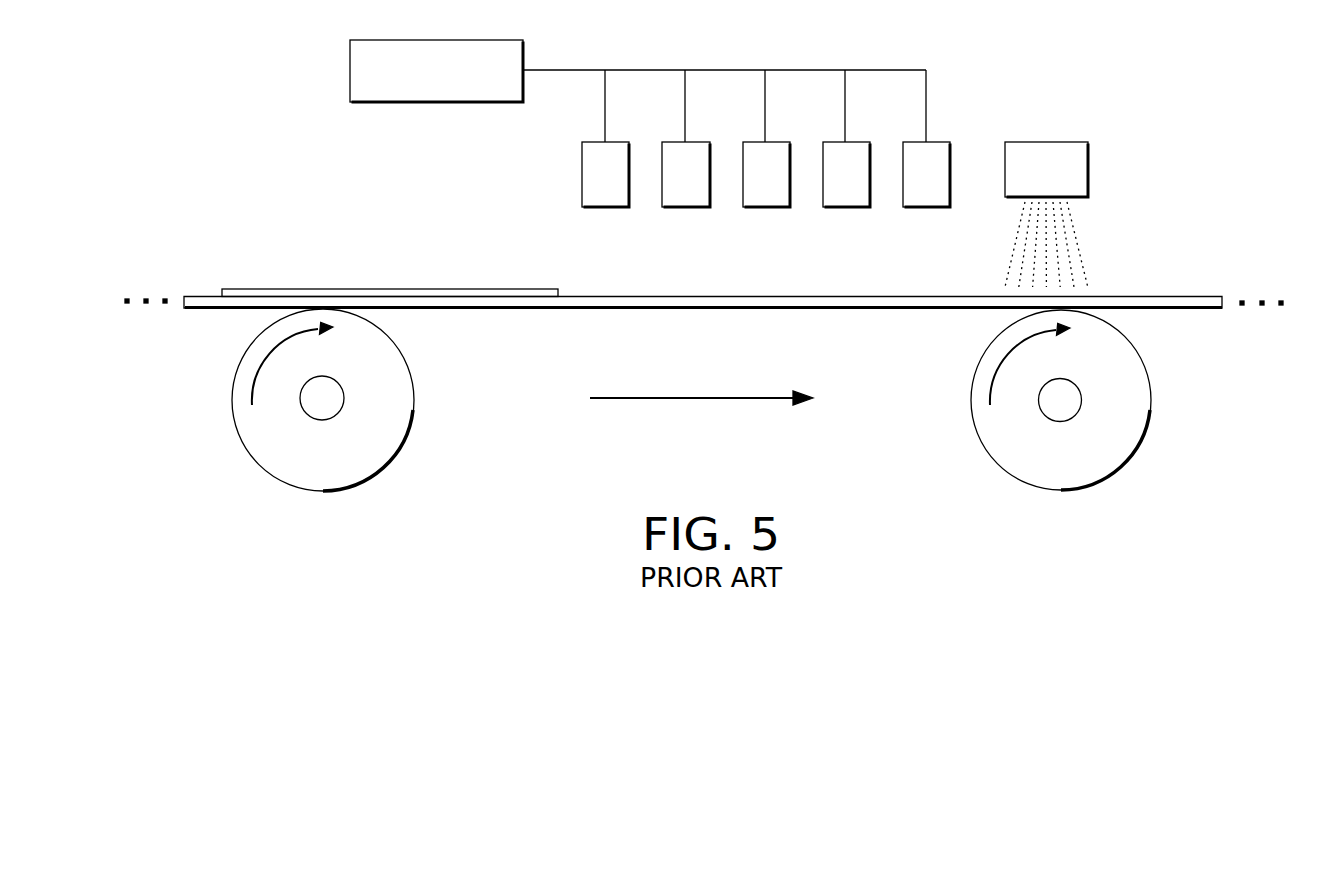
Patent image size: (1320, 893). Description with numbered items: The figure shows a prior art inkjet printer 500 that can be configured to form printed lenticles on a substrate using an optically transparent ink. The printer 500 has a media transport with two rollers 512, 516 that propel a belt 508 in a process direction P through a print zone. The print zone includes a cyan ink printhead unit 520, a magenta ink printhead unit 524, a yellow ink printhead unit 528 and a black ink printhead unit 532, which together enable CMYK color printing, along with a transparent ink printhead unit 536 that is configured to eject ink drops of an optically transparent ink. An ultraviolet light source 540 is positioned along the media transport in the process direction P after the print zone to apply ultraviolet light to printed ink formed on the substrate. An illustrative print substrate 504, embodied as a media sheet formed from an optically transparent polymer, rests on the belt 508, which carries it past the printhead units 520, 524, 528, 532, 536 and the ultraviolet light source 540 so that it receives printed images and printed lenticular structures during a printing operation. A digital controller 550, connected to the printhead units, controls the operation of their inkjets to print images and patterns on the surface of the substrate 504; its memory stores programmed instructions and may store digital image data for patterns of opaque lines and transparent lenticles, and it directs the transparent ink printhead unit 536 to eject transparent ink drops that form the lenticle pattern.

The printer 500 is at (243, 106).
The print substrate 504 is at (375, 288).
The belt 508 is at (728, 310).
The roller 512 is at (415, 398).
The roller 516 is at (970, 397).
The cyan ink printhead unit 520 is at (592, 140).
The magenta ink printhead unit 524 is at (673, 140).
The yellow ink printhead unit 528 is at (755, 140).
The black ink printhead unit 532 is at (835, 140).
The transparent ink printhead unit 536 is at (915, 140).
The ultraviolet (UV) light source 540 is at (1048, 141).
The digital controller 550 is at (437, 105).
The process direction P is at (703, 400).